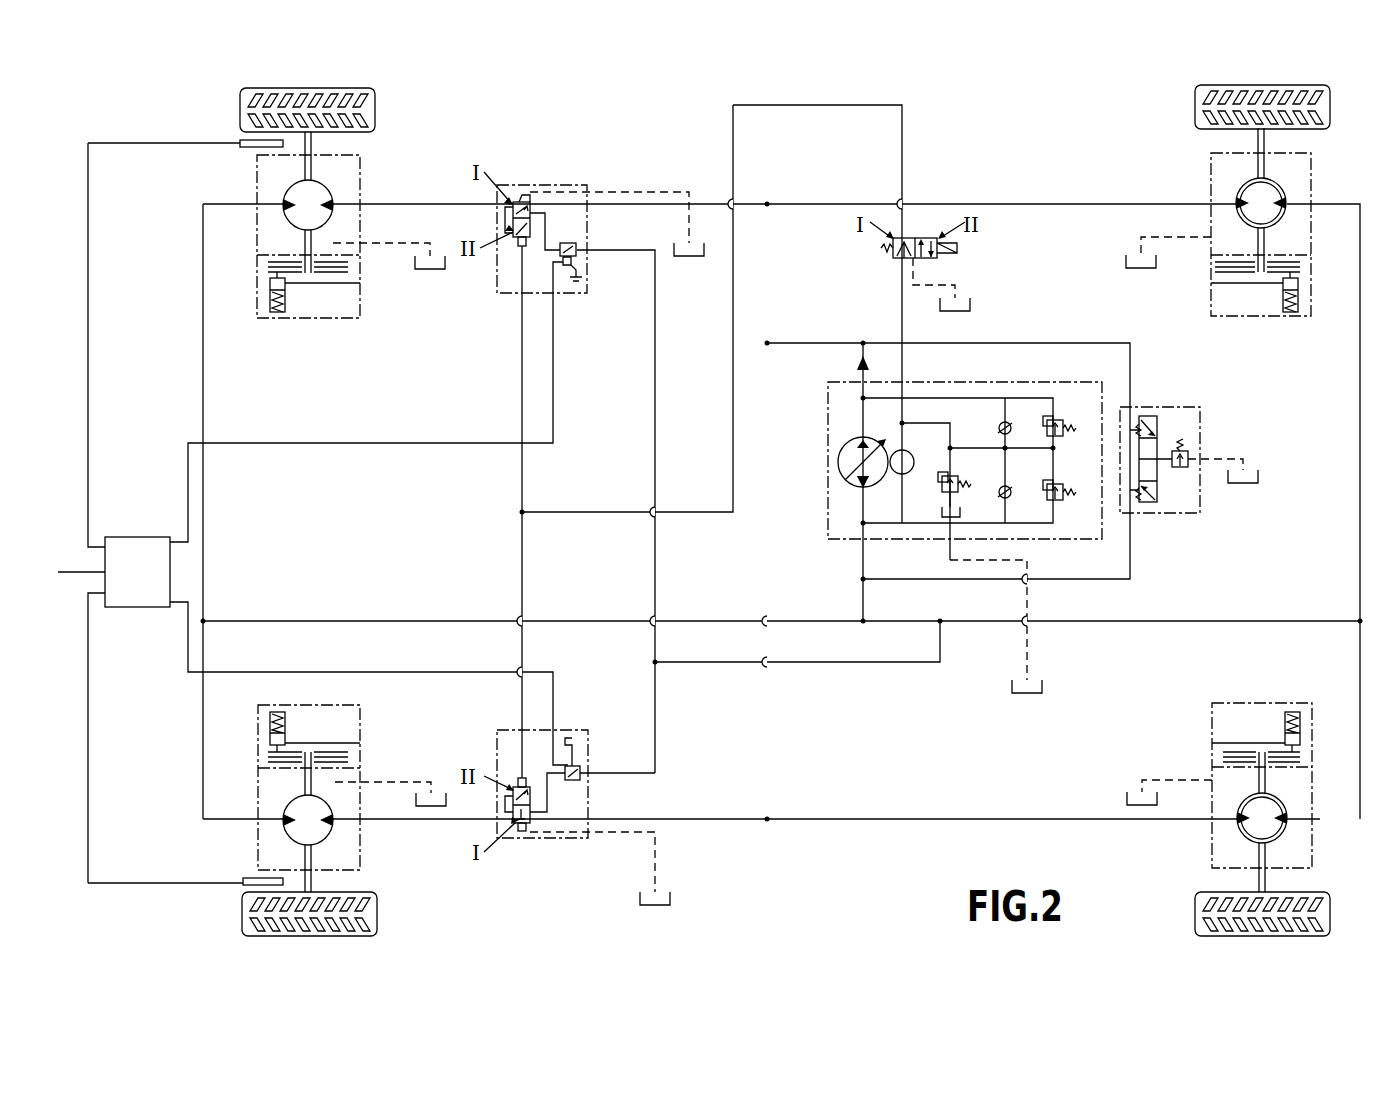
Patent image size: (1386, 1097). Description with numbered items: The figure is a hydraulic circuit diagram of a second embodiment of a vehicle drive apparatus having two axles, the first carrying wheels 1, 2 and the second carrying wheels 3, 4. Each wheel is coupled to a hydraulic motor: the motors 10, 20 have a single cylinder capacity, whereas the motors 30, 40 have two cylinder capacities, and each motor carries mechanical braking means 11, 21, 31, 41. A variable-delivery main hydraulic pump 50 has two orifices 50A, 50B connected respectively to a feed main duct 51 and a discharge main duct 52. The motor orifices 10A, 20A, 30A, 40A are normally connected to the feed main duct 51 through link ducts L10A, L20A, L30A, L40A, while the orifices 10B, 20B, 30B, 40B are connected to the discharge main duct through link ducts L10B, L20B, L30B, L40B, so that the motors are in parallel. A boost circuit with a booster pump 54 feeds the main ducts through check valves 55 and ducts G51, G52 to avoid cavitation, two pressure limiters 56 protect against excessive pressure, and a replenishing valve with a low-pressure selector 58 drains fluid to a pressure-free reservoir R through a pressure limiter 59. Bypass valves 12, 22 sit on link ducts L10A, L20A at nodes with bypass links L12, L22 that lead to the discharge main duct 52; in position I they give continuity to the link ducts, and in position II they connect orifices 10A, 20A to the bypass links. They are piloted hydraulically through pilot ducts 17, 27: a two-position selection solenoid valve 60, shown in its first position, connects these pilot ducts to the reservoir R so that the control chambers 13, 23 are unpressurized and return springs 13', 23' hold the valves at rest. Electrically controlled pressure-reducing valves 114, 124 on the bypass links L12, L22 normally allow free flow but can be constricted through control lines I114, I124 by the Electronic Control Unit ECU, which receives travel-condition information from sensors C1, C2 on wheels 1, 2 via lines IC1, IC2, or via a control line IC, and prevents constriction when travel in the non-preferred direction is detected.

The wheel 1 is at (377, 102).
The wheel 2 is at (380, 917).
The wheel 3 is at (1195, 104).
The wheel 4 is at (1195, 918).
The motor 10 is at (318, 199).
The main orifice 10A is at (336, 204).
The main orifice 10B is at (283, 205).
The mechanical braking means 11 is at (315, 298).
The bypass valve 12 is at (534, 197).
The control chamber 13 is at (491, 262).
The return spring 13' is at (508, 165).
The pilot duct 17 is at (520, 366).
The motor 20 is at (320, 834).
The main orifice 20A is at (336, 823).
The main orifice 20B is at (283, 823).
The mechanical braking means 21 is at (314, 736).
The bypass valve 22 is at (532, 827).
The control chamber 23 is at (492, 763).
The return spring 23' is at (506, 860).
The pilot duct 27 is at (520, 569).
The motor 30 is at (1284, 182).
The main orifice 30A is at (1236, 202).
The main orifice 30B is at (1287, 202).
The mechanical braking means 31 is at (1246, 296).
The motor 40 is at (1282, 846).
The main orifice 40A is at (1237, 820).
The main orifice 40B is at (1287, 820).
The mechanical braking means 41 is at (1257, 729).
The main hydraulic pump 50 is at (845, 460).
The orifice 50A is at (860, 437).
The orifice 50B is at (859, 490).
The feed main duct 51 is at (880, 330).
The discharge main duct 52 is at (860, 598).
The booster pump 54 is at (907, 474).
The check valves 55 is at (1001, 491).
The pressure limiters 56 is at (1070, 438).
The low-pressure selector 58 is at (1168, 479).
The pressure limiter 59 is at (1190, 451).
The selection solenoid valve 60 is at (919, 239).
The pressure-reducing valve 114 is at (576, 243).
The pressure-reducing valve 124 is at (580, 778).
The sensor C1 is at (252, 139).
The sensor C2 is at (246, 883).
The control line IC is at (92, 567).
The line IC1 is at (88, 314).
The line IC2 is at (88, 759).
The control line I114 is at (430, 443).
The control line I124 is at (452, 672).
The Electronic Control Unit ECU is at (137, 572).
The link duct L10A is at (704, 203).
The link duct L10B is at (206, 384).
The bypass link L12 is at (653, 368).
The link duct L20A is at (718, 818).
The link duct L20B is at (206, 642).
The bypass link L22 is at (655, 700).
The link duct L30A is at (1042, 203).
The link duct L30B is at (1358, 384).
The link duct L40A is at (906, 818).
The link duct L40B is at (1358, 640).
The duct G51 is at (928, 398).
The duct G52 is at (940, 539).
The pressure-free reservoir R is at (688, 256).